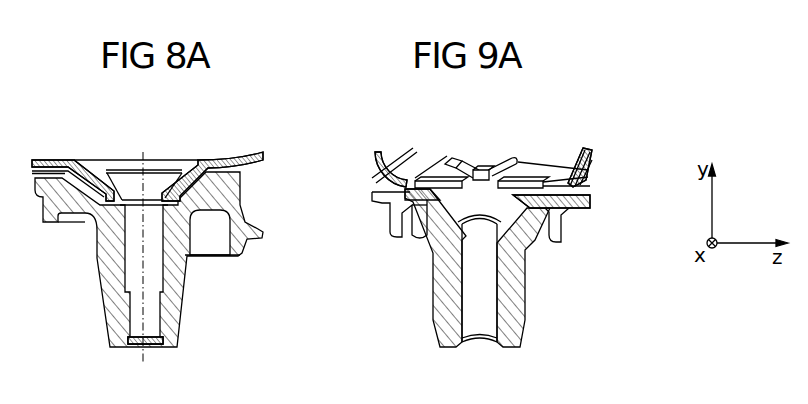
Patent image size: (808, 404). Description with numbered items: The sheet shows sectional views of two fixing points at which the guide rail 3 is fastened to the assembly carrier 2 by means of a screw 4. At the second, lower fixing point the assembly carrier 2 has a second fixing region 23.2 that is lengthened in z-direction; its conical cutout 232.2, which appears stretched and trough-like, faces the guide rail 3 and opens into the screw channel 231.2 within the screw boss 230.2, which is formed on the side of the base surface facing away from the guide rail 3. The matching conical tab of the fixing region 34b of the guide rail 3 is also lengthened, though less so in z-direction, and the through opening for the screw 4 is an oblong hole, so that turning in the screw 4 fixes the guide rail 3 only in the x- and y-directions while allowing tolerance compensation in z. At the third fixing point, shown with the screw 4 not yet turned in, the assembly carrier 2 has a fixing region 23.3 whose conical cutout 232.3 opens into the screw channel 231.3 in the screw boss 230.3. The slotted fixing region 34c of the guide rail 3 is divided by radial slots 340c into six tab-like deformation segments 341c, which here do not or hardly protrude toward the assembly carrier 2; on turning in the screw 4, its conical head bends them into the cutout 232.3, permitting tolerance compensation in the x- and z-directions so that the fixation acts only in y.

In FIG. 8A, the assembly carrier 2 is at (75, 232).
In FIG. 9A, the assembly carrier 2 is at (390, 218).
In FIG. 8A, the guide rail 3 is at (172, 143).
In FIG. 9A, the guide rail 3 is at (592, 155).
In FIG. 8A, the screw 4 is at (127, 158).
In FIG. 8A, the fixing region 34b is at (195, 160).
In FIG. 8A, the conical cutout 232.2 is at (205, 187).
In FIG. 8A, the screw boss 230.2 is at (180, 255).
In FIG. 8A, the second fixing region 23.2 is at (168, 257).
In FIG. 8A, the screw channel 231.2 is at (153, 323).
In FIG. 9A, the radial slots 340c is at (457, 159).
In FIG. 9A, the deformation segments 341c is at (481, 164).
In FIG. 9A, the fixing region 34c is at (536, 136).
In FIG. 9A, the conical cutout 232.3 is at (552, 208).
In FIG. 9A, the screw boss 230.3 is at (525, 272).
In FIG. 9A, the fixing region 23.3 is at (518, 276).
In FIG. 9A, the screw channel 231.3 is at (475, 318).